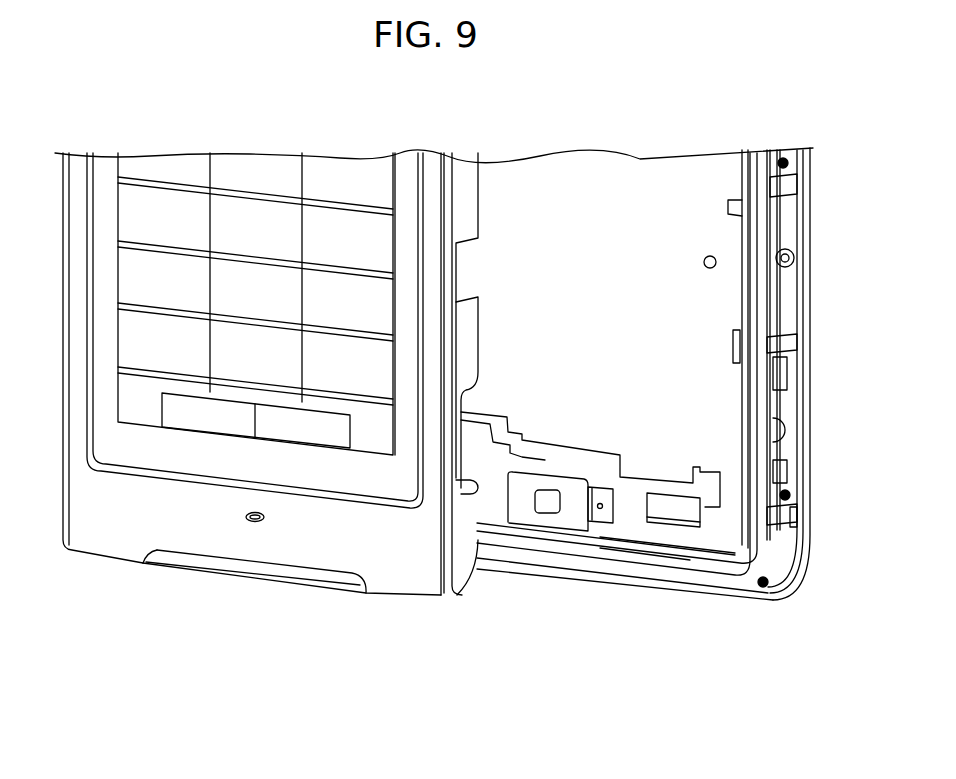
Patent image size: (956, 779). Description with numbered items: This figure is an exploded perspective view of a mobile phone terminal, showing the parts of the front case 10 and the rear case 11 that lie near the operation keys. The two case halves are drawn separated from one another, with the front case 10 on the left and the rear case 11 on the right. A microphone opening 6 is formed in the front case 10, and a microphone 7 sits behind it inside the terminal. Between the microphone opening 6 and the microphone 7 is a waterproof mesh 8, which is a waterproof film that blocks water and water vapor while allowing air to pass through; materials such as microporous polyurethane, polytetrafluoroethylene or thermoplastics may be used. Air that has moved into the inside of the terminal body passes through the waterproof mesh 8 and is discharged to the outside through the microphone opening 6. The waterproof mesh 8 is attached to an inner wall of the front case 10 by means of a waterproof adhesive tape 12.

The microphone opening 6 is at (253, 522).
The microphone 7 is at (602, 515).
The waterproof mesh 8 is at (547, 508).
The front case 10 is at (390, 592).
The rear case 11 is at (592, 187).
The waterproof adhesive tape 12 is at (567, 483).